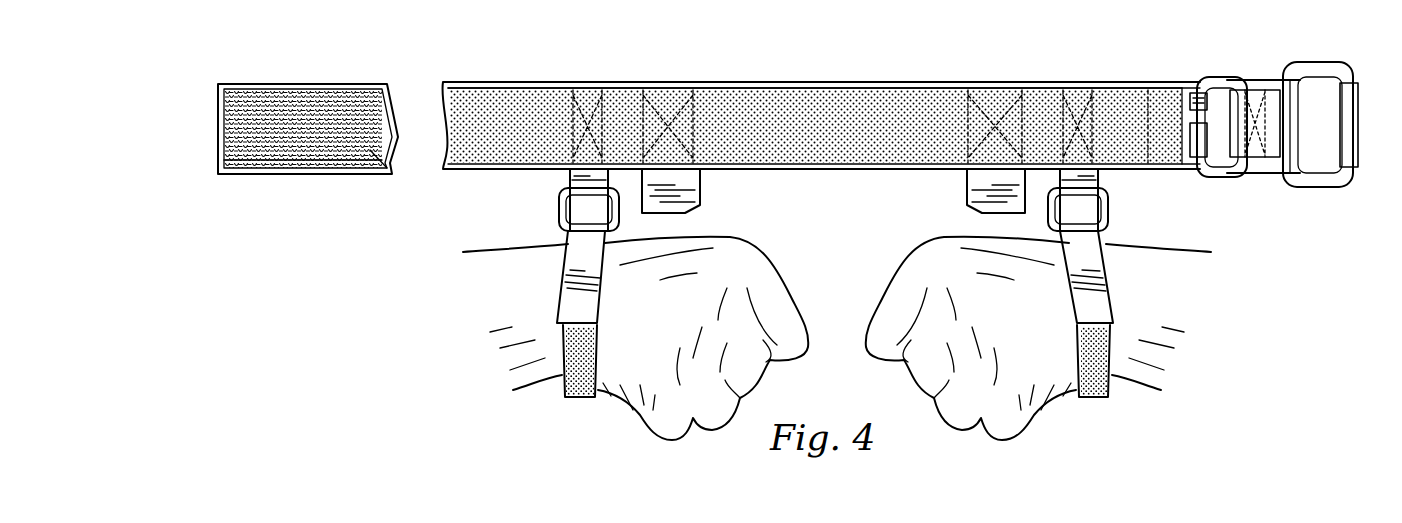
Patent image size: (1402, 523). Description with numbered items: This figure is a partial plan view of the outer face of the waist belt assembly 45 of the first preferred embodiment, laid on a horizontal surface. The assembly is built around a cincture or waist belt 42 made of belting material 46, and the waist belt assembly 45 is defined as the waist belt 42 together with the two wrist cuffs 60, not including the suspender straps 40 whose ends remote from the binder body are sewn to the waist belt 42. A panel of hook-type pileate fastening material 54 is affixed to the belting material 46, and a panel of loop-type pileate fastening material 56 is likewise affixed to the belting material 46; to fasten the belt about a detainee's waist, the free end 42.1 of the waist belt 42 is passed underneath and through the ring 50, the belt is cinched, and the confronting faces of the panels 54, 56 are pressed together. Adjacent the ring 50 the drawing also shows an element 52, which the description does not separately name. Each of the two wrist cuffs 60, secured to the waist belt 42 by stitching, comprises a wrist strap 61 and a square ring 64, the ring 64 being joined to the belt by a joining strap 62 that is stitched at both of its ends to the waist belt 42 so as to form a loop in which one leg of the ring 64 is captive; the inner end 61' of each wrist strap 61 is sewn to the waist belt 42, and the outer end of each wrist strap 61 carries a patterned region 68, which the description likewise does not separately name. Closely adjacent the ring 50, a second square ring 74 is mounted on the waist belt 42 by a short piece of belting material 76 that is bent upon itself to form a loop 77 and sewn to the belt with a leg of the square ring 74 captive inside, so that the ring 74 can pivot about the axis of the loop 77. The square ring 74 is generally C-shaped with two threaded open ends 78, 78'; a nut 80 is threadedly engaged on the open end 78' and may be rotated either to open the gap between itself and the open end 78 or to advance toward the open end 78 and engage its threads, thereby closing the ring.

The suspender strap 40 is at (683, 190).
The waist belt 42 is at (971, 72).
The free end of waist belt 42.1 is at (335, 150).
The waist belt assembly 45 is at (403, 336).
The belting material 46 is at (375, 140).
The ring 50 is at (1325, 180).
The buckle plate 52 is at (1355, 97).
The panel of hook-type pileate fastening material 54 is at (255, 100).
The panel of loop-type pileate fastening material 56 is at (577, 98).
The wrist cuff 60 is at (578, 420).
The wrist strap 61 is at (832, 277).
The inner end of wrist strap 61' is at (832, 94).
The joining strap 62 is at (570, 179).
The square ring 64 is at (560, 210).
The hand strap fastener end 68 is at (577, 396).
The square ring 74 is at (1217, 77).
The short piece of belting material 76 is at (1265, 150).
The loop 77 is at (1240, 110).
The open end of square ring 78 is at (1181, 65).
The open end of square ring 78' is at (1126, 104).
The nut 80 is at (1203, 135).